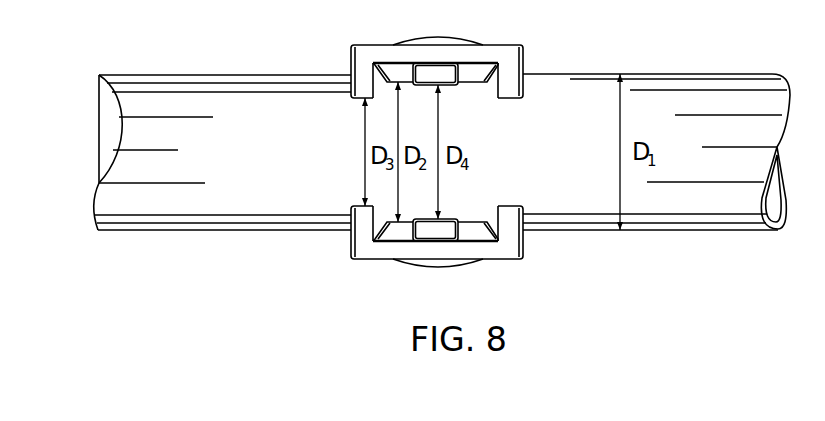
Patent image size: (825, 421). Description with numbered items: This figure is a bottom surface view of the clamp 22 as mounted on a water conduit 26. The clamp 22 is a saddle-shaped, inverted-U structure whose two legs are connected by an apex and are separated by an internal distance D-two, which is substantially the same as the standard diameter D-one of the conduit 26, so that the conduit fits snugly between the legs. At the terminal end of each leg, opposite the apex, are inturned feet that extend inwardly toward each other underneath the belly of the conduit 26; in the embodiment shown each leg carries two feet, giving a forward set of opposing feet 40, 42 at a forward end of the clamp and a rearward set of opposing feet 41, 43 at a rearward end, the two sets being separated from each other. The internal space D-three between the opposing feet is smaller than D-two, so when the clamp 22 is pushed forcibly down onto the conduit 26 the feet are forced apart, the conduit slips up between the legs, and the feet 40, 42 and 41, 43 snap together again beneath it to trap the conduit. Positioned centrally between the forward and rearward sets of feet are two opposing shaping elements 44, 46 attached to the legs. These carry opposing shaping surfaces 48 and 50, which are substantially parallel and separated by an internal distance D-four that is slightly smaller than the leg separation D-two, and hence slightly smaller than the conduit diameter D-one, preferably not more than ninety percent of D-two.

The clamp 22 is at (517, 60).
The water conduit 26 is at (727, 90).
The inturned foot 40 is at (513, 235).
The inturned foot 41 is at (362, 248).
The inturned foot 42 is at (504, 90).
The inturned foot 43 is at (362, 90).
The shaping element 44 is at (437, 232).
The shaping element 46 is at (437, 75).
The shaping surface 48 is at (445, 218).
The shaping surface 50 is at (455, 86).